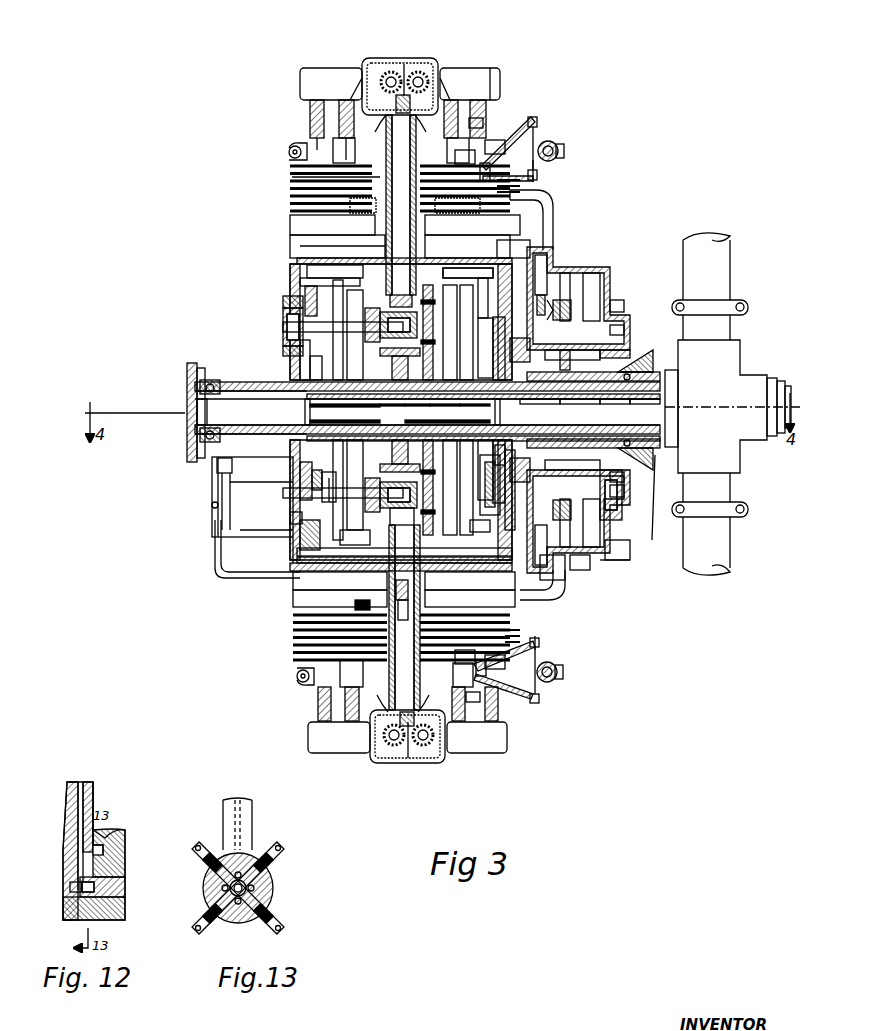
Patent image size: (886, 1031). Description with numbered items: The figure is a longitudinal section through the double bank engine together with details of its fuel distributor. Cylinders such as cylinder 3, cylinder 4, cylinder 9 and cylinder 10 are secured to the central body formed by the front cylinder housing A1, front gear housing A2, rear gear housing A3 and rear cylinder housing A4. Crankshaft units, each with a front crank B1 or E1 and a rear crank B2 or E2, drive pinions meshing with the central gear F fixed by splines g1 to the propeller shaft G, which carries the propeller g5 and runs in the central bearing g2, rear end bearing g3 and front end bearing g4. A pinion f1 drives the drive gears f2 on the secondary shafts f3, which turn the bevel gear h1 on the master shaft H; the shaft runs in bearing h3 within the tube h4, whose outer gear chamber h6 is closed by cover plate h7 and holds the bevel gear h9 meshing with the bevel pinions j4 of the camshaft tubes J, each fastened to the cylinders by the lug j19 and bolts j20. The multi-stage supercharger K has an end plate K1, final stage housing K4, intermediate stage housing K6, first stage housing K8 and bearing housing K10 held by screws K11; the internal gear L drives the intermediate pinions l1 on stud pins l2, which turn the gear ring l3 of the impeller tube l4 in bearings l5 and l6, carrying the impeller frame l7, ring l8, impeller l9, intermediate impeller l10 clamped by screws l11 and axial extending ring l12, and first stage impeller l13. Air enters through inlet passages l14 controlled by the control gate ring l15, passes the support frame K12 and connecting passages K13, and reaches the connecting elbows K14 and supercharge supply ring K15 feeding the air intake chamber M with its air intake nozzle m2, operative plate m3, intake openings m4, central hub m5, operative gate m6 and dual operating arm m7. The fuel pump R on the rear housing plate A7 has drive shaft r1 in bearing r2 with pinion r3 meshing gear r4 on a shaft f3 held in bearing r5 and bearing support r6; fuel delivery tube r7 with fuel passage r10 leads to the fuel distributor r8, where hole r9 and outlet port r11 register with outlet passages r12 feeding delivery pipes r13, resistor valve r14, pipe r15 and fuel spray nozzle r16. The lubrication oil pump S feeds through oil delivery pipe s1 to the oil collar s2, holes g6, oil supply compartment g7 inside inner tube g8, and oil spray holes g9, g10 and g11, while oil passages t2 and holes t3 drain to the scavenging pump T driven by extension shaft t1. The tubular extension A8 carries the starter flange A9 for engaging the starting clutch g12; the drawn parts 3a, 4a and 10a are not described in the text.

In FIG. 3, the master shaft H is at (435, 100).
In FIG. 3, the cover plate h7 is at (410, 62).
In FIG. 3, the gear chamber h6 is at (440, 75).
In FIG. 3, the bevel gear h9 is at (362, 90).
In FIG. 3, the bevel pinion j4 is at (402, 68).
In FIG. 3, the camshaft tube J is at (300, 75).
In FIG. 3, the bearing h3 is at (490, 70).
In FIG. 3, the tube h4 is at (310, 115).
In FIG. 3, the lug j19 is at (333, 148).
In FIG. 3, the bolts j20 is at (486, 125).
In FIG. 3, the scavenging pump T is at (402, 765).
In FIG. 3, the extension shaft t1 is at (418, 762).
In FIG. 3, the air intake chamber M is at (294, 148).
In FIG. 3, the cylinder 3 is at (290, 190).
In FIG. 3, the resistor valve r14 is at (290, 164).
In FIG. 3, the delivery pipes r13 is at (290, 176).
In FIG. 13, the delivery pipes r13 is at (205, 850).
In FIG. 3, the pipe r15 is at (505, 145).
In FIG. 3, the fuel spray nozzle r16 is at (488, 170).
In FIG. 3, the air intake nozzle m2 is at (520, 130).
In FIG. 3, the operative plate m3 is at (537, 120).
In FIG. 3, the operative gate m6 is at (556, 145).
In FIG. 3, the dual operating arm m7 is at (556, 152).
In FIG. 3, the central hub m5 is at (564, 152).
In FIG. 3, the intake openings m4 is at (537, 178).
In FIG. 3, the cylinder 4 is at (520, 190).
In FIG. 3, the connecting elbows K14 is at (555, 205).
In FIG. 3, the pipe flange 4a is at (515, 245).
In FIG. 3, the cylinder flange 3a is at (300, 275).
In FIG. 3, the front cylinder housing A1 is at (330, 240).
In FIG. 3, the front gear housing A2 is at (330, 248).
In FIG. 3, the rear gear housing A3 is at (320, 262).
In FIG. 3, the rear cylinder housing A4 is at (330, 270).
In FIG. 3, the front crank E1 is at (450, 265).
In FIG. 3, the supercharge supply ring K15 is at (482, 278).
In FIG. 3, the rear crank E2 is at (302, 280).
In FIG. 3, the bevel gear h1 is at (333, 300).
In FIG. 3, the lubrication oil pump S is at (283, 318).
In FIG. 3, the secondary shafts f3 is at (283, 302).
In FIG. 3, the central bearing g2 is at (300, 385).
In FIG. 3, the rear end bearing g3 is at (210, 383).
In FIG. 3, the oil delivery pipe s1 is at (320, 378).
In FIG. 3, the oil collar s2 is at (300, 378).
In FIG. 3, the splines g1 is at (505, 345).
In FIG. 3, the stud pins l2 is at (485, 318).
In FIG. 3, the connecting passages K13 is at (556, 268).
In FIG. 3, the intermediate impeller l10 is at (575, 268).
In FIG. 3, the support frame K12 is at (590, 283).
In FIG. 3, the first stage impeller l13 is at (605, 285).
In FIG. 3, the impeller l9 is at (556, 318).
In FIG. 3, the screws l11 is at (592, 350).
In FIG. 3, the air inlet passages l14 is at (622, 315).
In FIG. 3, the control gate ring l15 is at (626, 330).
In FIG. 3, the screws K11 is at (630, 350).
In FIG. 3, the front end bearing g4 is at (638, 365).
In FIG. 3, the holes g6 is at (427, 411).
In FIG. 3, the oil spray holes g11 is at (321, 412).
In FIG. 3, the oil spray holes g10 is at (345, 412).
In FIG. 3, the oil supply compartment g7 is at (392, 409).
In FIG. 3, the drive gears f2 is at (417, 410).
In FIG. 3, the pinion f1 is at (445, 410).
In FIG. 3, the oil spray holes g9 is at (490, 530).
In FIG. 3, the inner tube g8 is at (504, 411).
In FIG. 3, the impeller tube l4 is at (525, 395).
In FIG. 3, the bearing l5 is at (555, 395).
In FIG. 3, the impeller frame l7 is at (590, 400).
In FIG. 3, the bearing l6 is at (618, 385).
In FIG. 3, the starter flange A9 is at (187, 368).
In FIG. 3, the tubular extension A8 is at (210, 420).
In FIG. 3, the starting clutch g12 is at (197, 420).
In FIG. 3, the rear crank B2 is at (362, 462).
In FIG. 3, the front crank B1 is at (476, 572).
In FIG. 3, the bearing support r6 is at (308, 468).
In FIG. 3, the bearing r5 is at (322, 480).
In FIG. 3, the central gear F is at (336, 484).
In FIG. 3, the cylinder flange 10a is at (345, 540).
In FIG. 3, the gear ring l3 is at (495, 450).
In FIG. 3, the internal gear L is at (492, 462).
In FIG. 3, the multi-stage supercharger K is at (578, 575).
In FIG. 3, the axial extending ring l12 is at (590, 480).
In FIG. 3, the bearing housing K10 is at (626, 490).
In FIG. 3, the axially extending ring l8 is at (545, 525).
In FIG. 3, the end plate K1 is at (556, 588).
In FIG. 3, the final stage housing K4 is at (582, 580).
In FIG. 3, the intermediate stage housing K6 is at (602, 570).
In FIG. 3, the first stage housing K8 is at (618, 553).
In FIG. 3, the propeller shaft G is at (650, 503).
In FIG. 3, the cylinder 10 is at (293, 643).
In FIG. 3, the cylinder 9 is at (520, 636).
In FIG. 3, the oil passages t2 is at (394, 590).
In FIG. 3, the holes t3 is at (390, 606).
In FIG. 3, the fuel pump R is at (245, 480).
In FIG. 12, the fuel pump R is at (118, 840).
In FIG. 3, the fuel delivery tube r7 is at (212, 468).
In FIG. 12, the fuel delivery tube r7 is at (70, 785).
In FIG. 13, the fuel delivery tube r7 is at (252, 822).
In FIG. 3, the gear r4 is at (222, 490).
In FIG. 3, the fuel distributor r8 is at (212, 520).
In FIG. 12, the fuel distributor r8 is at (63, 858).
In FIG. 13, the fuel distributor r8 is at (272, 880).
In FIG. 3, the drive shaft r1 is at (290, 520).
In FIG. 12, the drive shaft r1 is at (125, 882).
In FIG. 3, the bearing r2 is at (290, 532).
In FIG. 3, the pinion r3 is at (320, 512).
In FIG. 3, the rear housing plate A7 is at (293, 560).
In FIG. 3, the propeller g5 is at (718, 452).
In FIG. 12, the fuel passage r10 is at (93, 800).
In FIG. 12, the hole r9 is at (70, 887).
In FIG. 13, the hole r9 is at (272, 890).
In FIG. 12, the outlet port r11 is at (63, 905).
In FIG. 13, the outlet port r11 is at (238, 923).
In FIG. 13, the outlet passages r12 is at (222, 845).